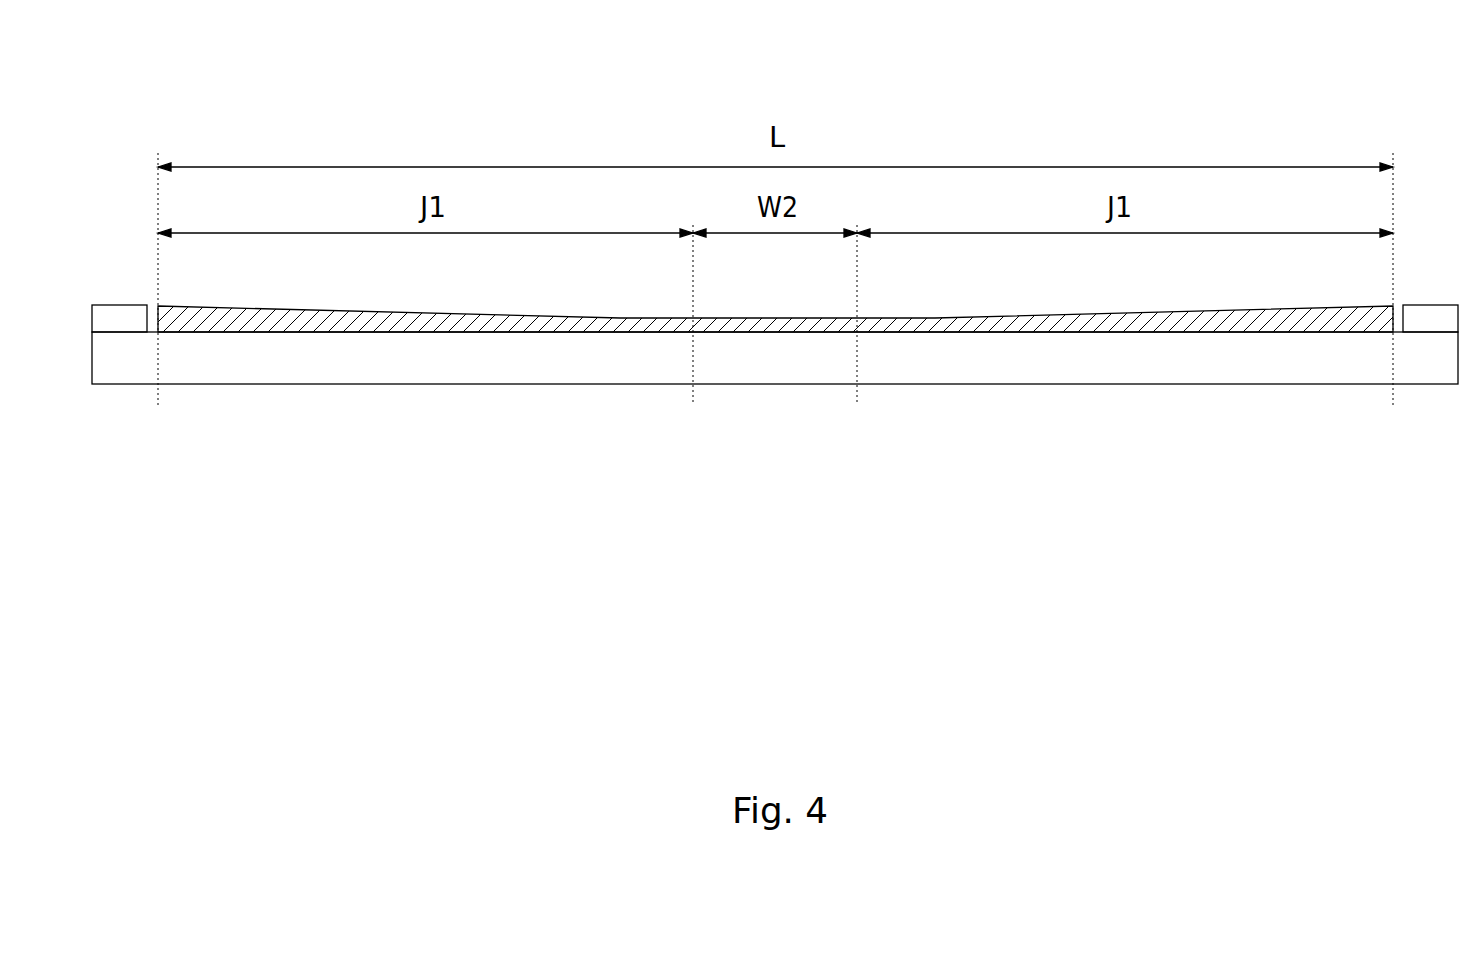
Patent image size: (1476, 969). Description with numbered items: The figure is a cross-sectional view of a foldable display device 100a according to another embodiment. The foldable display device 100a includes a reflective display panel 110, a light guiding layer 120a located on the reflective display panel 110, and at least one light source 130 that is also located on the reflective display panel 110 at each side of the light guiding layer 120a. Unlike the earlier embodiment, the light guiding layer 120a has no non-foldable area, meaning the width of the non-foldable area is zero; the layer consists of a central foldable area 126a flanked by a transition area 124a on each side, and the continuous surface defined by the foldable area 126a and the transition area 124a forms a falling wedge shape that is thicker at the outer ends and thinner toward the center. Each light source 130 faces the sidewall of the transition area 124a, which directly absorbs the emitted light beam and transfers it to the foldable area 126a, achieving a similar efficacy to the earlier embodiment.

The foldable display device 100a is at (1458, 85).
The reflective display panel 110 is at (1222, 384).
The light guiding layer 120a is at (878, 484).
The transition area 124a is at (574, 334).
The foldable area 126a is at (764, 344).
The light source 130 is at (122, 312).